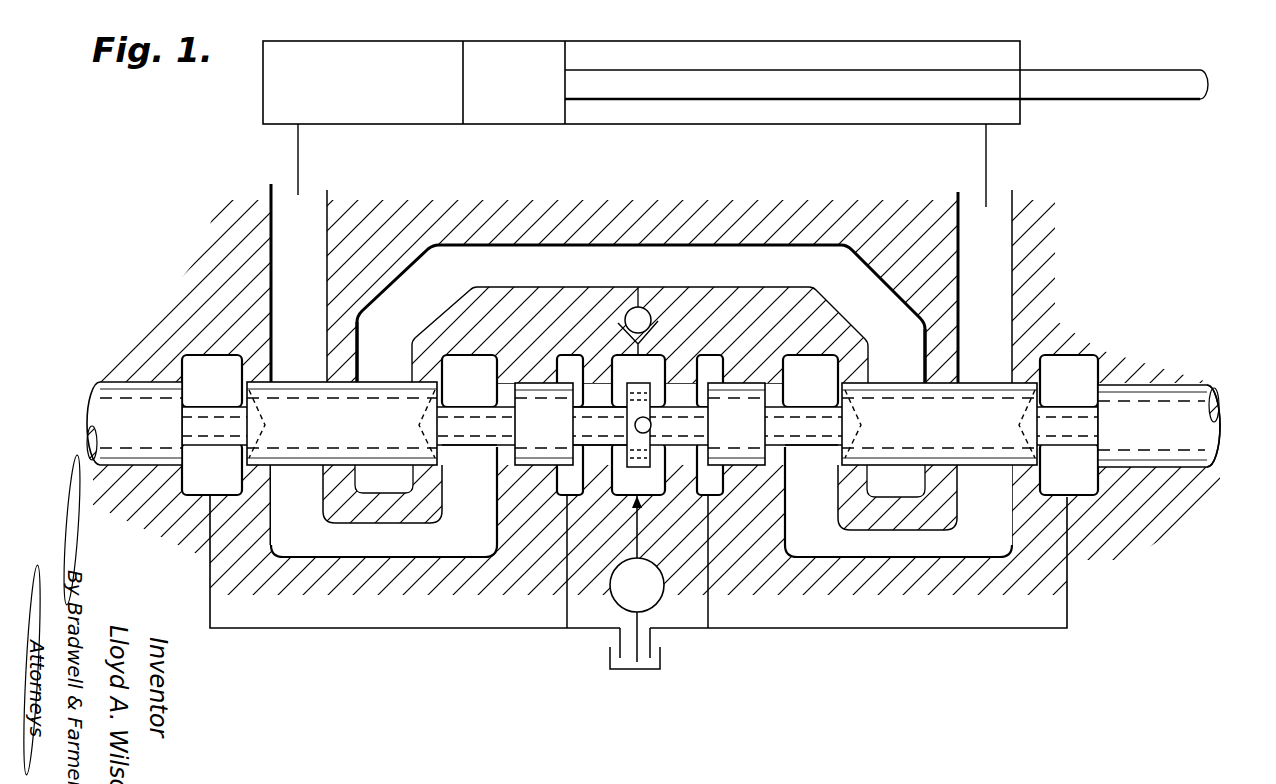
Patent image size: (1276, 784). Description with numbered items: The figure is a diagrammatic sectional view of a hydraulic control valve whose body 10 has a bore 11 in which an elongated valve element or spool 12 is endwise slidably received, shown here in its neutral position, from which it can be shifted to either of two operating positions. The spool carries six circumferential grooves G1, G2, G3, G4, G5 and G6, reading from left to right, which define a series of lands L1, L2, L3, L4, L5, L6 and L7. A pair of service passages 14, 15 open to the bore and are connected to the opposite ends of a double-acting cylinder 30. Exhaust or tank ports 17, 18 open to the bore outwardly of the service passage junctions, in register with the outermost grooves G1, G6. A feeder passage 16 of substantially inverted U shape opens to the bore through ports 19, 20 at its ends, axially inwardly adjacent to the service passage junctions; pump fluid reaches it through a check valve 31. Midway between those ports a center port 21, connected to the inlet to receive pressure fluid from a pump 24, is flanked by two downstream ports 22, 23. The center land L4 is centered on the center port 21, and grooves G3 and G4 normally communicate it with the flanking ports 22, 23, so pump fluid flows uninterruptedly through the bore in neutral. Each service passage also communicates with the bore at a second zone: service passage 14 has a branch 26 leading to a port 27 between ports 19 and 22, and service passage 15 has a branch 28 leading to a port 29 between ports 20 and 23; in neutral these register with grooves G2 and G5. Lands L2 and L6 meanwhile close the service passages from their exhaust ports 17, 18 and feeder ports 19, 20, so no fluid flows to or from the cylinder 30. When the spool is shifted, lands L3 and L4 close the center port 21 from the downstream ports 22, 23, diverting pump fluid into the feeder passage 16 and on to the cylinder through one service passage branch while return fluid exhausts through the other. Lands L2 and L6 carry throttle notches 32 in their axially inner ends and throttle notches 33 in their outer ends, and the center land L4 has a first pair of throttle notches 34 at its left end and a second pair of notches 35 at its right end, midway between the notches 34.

The body 10 is at (1087, 282).
The bore 11 is at (674, 403).
The valve element or spool 12 is at (1200, 453).
The service passage 14 is at (305, 291).
The service passage 15 is at (992, 275).
The feeder passage 16 is at (604, 277).
The exhaust port 17 is at (207, 391).
The exhaust port 18 is at (1072, 398).
The port 19 is at (358, 372).
The port 20 is at (926, 372).
The center port 21 is at (650, 495).
The flanking port 22 is at (558, 485).
The flanking port 23 is at (718, 495).
The pump 24 is at (665, 585).
The branch 26 is at (366, 552).
The port 27 is at (482, 362).
The branch 28 is at (889, 552).
The port 29 is at (826, 367).
The double-acting cylinder 30 is at (658, 124).
The check valve 31 is at (647, 306).
The throttle notches 32 is at (638, 424).
The throttle notches 33 is at (642, 424).
The throttle notches 34 is at (638, 425).
The throttle notches 35 is at (655, 440).
The circumferential groove G1 is at (231, 372).
The circumferential groove G2 is at (452, 450).
The circumferential groove G3 is at (578, 365).
The circumferential groove G4 is at (703, 365).
The circumferential groove G5 is at (795, 450).
The circumferential groove G6 is at (1089, 372).
The land L1 is at (137, 432).
The land L2 is at (347, 432).
The land L3 is at (549, 432).
The center land L4 is at (600, 436).
The land L5 is at (747, 432).
The land L6 is at (939, 432).
The land L7 is at (1165, 432).